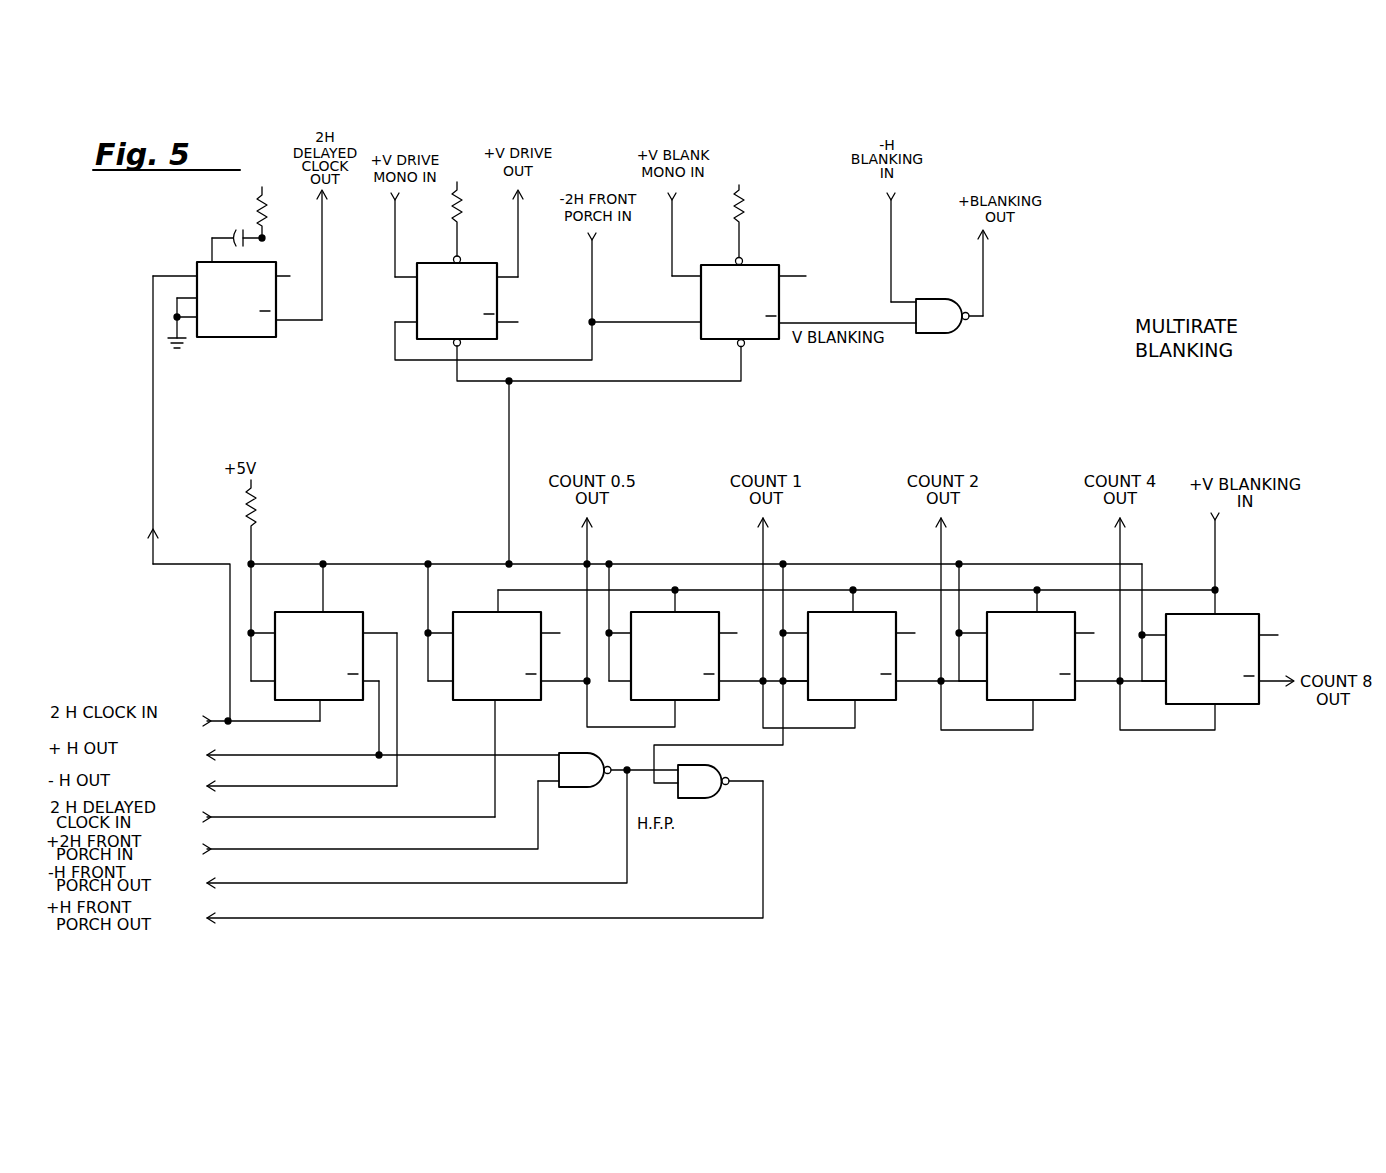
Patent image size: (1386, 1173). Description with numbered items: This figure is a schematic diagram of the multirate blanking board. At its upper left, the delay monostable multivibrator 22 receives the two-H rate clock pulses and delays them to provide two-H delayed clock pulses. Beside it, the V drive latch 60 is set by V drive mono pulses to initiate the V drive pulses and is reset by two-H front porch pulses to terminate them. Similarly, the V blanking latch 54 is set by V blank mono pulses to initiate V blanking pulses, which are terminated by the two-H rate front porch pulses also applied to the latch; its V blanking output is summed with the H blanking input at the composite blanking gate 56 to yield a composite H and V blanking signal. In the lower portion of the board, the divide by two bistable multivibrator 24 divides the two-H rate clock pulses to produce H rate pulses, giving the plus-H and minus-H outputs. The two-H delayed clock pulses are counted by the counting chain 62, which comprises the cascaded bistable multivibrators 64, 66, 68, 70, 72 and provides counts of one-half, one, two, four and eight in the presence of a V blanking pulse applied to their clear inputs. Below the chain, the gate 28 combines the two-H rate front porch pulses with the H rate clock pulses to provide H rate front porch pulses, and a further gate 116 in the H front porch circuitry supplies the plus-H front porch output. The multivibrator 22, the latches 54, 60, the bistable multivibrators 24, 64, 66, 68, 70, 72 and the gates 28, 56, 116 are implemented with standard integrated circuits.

The delay monostable multivibrator 22 is at (234, 340).
The V drive latch 60 is at (445, 340).
The V blanking latch 54 is at (734, 342).
The composite blanking gate 56 is at (918, 302).
The counting chain 62 is at (907, 776).
The divide by two bistable multivibrator 24 is at (305, 608).
The bistable multivibrator 64 is at (470, 608).
The bistable multivibrator 66 is at (662, 604).
The bistable multivibrator 68 is at (832, 604).
The bistable multivibrator 70 is at (1019, 604).
The bistable multivibrator 72 is at (1231, 618).
The gate 28 is at (565, 787).
The gate 116 is at (697, 800).